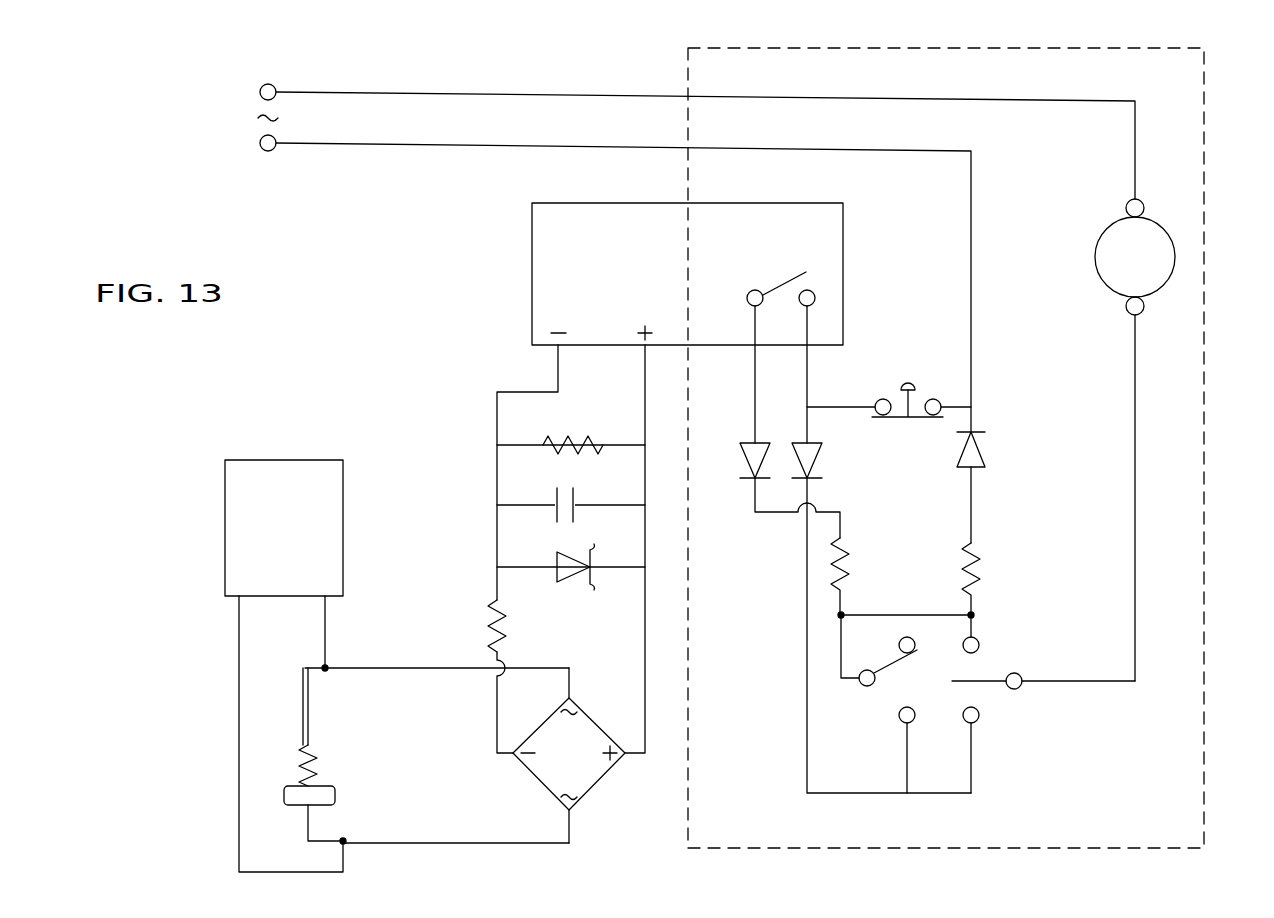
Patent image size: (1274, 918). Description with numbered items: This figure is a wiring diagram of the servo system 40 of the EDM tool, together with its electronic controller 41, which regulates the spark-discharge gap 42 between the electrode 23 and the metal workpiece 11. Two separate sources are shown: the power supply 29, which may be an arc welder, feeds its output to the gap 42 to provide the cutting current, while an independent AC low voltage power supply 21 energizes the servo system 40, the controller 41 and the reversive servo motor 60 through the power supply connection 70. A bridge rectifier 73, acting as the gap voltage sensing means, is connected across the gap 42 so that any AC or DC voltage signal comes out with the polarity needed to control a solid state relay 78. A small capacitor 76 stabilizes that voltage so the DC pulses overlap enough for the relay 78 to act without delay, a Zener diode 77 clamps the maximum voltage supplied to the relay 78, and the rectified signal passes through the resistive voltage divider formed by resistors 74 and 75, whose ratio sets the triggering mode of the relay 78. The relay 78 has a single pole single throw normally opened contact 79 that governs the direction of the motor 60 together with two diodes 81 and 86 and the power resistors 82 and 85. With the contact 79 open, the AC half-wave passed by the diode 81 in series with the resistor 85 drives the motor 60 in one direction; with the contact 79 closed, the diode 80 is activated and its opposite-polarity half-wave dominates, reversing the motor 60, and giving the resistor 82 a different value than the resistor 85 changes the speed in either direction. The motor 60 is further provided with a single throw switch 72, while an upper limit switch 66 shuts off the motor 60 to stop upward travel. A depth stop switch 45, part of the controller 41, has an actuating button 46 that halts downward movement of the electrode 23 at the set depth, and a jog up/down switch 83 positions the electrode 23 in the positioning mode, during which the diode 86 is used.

The workpiece 11 is at (298, 806).
The power supply 21 is at (250, 88).
The electrode 23 is at (301, 696).
The power supply 29 is at (236, 546).
The servo system 40 is at (1205, 700).
The electronic controller 41 is at (716, 692).
The gap 42 is at (300, 766).
The depth stop switch 45 is at (906, 420).
The actuating element (button) 46 is at (908, 382).
The motor 60 is at (1100, 278).
The upper limit switch 66 is at (866, 688).
The power supply connection 70 is at (372, 86).
The single throw switch 72 is at (1016, 690).
The bridge rectifier 73 is at (540, 772).
The resistor 74 is at (554, 440).
The resistor 75 is at (490, 615).
The capacitor 76 is at (548, 500).
The Zener diode 77 is at (576, 578).
The solid state relay 78 is at (540, 224).
The normally opened contact 79 is at (812, 266).
The diode 80 is at (746, 462).
The diode 81 is at (985, 460).
The power resistor 82 is at (846, 565).
The jog up/down switch 83 is at (980, 650).
The power resistor 85 is at (980, 575).
The diode 86 is at (820, 462).